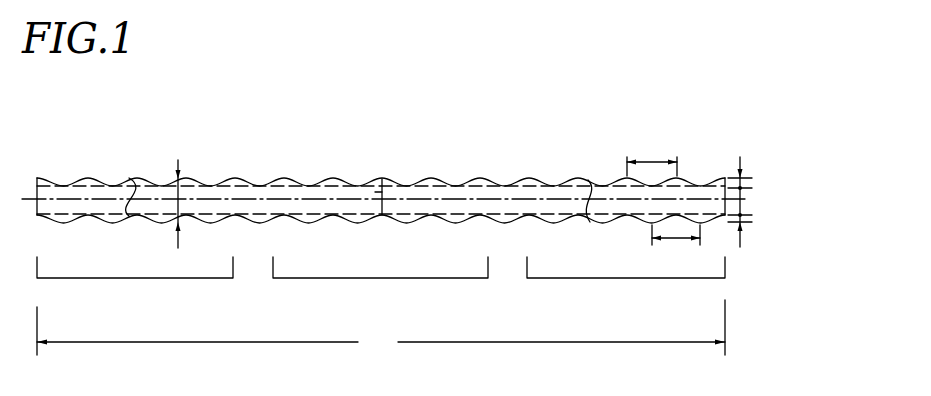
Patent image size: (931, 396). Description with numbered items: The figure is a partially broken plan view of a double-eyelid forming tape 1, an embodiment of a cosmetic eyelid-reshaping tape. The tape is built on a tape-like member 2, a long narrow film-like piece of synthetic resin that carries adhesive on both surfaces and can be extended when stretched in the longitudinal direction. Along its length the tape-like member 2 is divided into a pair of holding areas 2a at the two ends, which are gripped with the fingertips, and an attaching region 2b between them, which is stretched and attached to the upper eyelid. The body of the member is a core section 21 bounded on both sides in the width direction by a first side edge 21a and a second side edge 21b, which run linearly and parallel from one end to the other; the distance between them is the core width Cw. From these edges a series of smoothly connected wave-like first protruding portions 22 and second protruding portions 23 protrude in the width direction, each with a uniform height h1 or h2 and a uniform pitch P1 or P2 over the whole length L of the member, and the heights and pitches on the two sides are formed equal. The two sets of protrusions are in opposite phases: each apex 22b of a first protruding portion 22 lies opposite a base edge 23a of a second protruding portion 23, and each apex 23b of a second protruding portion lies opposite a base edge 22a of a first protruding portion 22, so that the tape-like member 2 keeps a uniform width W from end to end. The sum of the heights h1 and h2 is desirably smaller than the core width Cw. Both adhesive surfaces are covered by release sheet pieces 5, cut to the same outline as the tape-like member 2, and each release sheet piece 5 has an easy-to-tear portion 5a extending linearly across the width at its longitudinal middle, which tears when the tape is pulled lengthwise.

The double-eyelid forming tape 1 is at (383, 134).
The tape-like member 2 is at (233, 195).
The holding area 2a is at (133, 278).
The attaching region 2b is at (380, 278).
The release sheet piece 5 is at (72, 195).
The easy-to-tear portion 5a is at (364, 183).
The core section 21 is at (303, 192).
The first side edge 21a is at (139, 180).
The second side edge 21b is at (142, 222).
The first protruding portion 22 is at (386, 180).
The base edge 22a is at (504, 185).
The apex 22b is at (431, 178).
The second protruding portion 23 is at (337, 220).
The base edge 23a is at (480, 216).
The thread root 23b is at (403, 222).
The width W is at (180, 197).
The length L is at (381, 329).
The pitch P1 is at (652, 152).
The pitch P2 is at (676, 246).
The height h1 is at (748, 183).
The height h2 is at (748, 222).
The width of the core section Cw is at (748, 202).